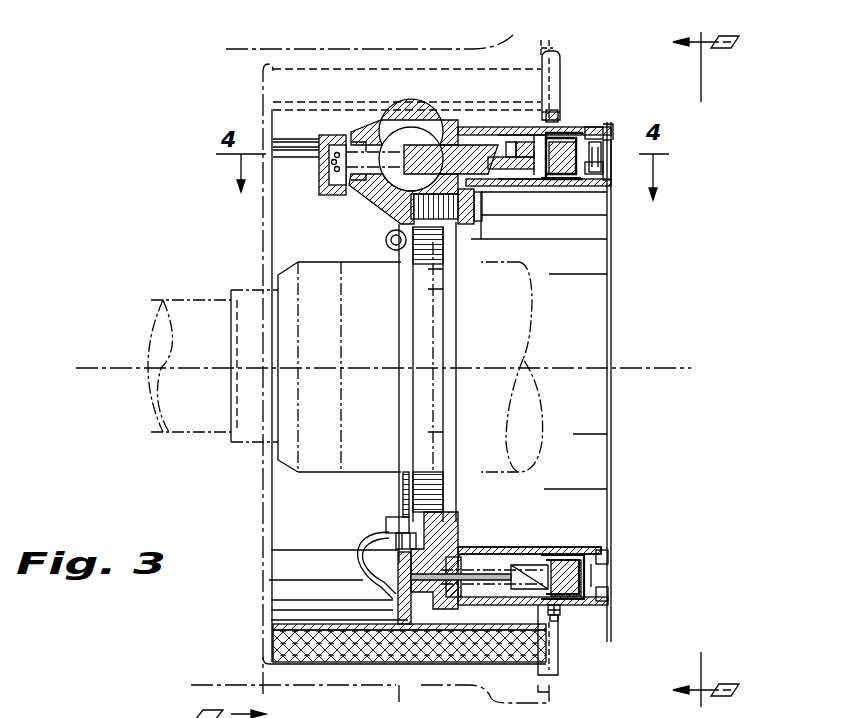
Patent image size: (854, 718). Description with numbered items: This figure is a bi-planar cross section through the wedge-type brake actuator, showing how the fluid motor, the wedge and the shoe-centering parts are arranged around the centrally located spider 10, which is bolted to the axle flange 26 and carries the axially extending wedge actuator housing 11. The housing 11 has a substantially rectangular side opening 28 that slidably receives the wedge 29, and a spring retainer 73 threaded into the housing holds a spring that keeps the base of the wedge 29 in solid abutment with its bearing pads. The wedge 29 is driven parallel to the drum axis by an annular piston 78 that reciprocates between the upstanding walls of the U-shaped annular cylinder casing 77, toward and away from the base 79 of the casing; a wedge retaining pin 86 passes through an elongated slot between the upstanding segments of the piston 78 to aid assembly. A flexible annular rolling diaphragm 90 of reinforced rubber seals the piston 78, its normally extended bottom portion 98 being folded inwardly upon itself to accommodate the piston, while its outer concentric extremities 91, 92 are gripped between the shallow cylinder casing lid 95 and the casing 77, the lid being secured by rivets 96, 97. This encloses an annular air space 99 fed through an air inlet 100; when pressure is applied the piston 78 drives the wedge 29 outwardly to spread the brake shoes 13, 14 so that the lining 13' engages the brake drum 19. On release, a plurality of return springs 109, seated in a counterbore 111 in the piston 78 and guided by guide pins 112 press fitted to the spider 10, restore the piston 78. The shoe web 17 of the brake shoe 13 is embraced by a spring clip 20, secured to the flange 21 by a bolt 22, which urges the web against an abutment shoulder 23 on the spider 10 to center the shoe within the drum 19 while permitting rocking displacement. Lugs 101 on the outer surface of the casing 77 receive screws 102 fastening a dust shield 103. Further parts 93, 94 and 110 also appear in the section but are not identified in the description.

The spider 10 is at (445, 345).
The wedge actuator housing 11 is at (375, 195).
The brake shoe 13 is at (407, 590).
The lining 13' is at (404, 666).
The brake shoe 14 is at (520, 80).
The shoe web 17 is at (397, 612).
The brake drum 19 is at (532, 30).
The spring clip 20 is at (378, 536).
The flange 21 is at (395, 515).
The bolt 22 is at (392, 530).
The abutment shoulder 23 is at (457, 540).
The axle flange 26 is at (450, 360).
The side opening 28 is at (436, 143).
The wedge 29 is at (483, 140).
The spring retainer 73 is at (335, 135).
The annular cylinder casing 77 is at (520, 128).
The annular piston 78 is at (570, 145).
The base of the casing 79 is at (470, 190).
The wedge retaining pin 86 is at (505, 182).
The flexible annular rolling diaphragm 90 is at (600, 126).
The outer concentric extremity of the diaphragm 91 is at (612, 133).
The outer concentric extremity of the diaphragm 92 is at (608, 182).
The rim 93 is at (608, 128).
The bracket 94 is at (608, 208).
The cylinder casing lid 95 is at (607, 148).
The rivet 96 is at (607, 545).
The rivet 97 is at (607, 600).
The bottom portion of the diaphragm 98 is at (575, 176).
The annular air space 99 is at (560, 183).
The air inlet 100 is at (605, 168).
The lug 101 is at (562, 112).
The screw 102 is at (572, 627).
The dust shield 103 is at (560, 665).
The return spring 109 is at (460, 595).
The rod 110 is at (440, 600).
The counterbore 111 is at (520, 560).
The guide pin 112 is at (495, 590).